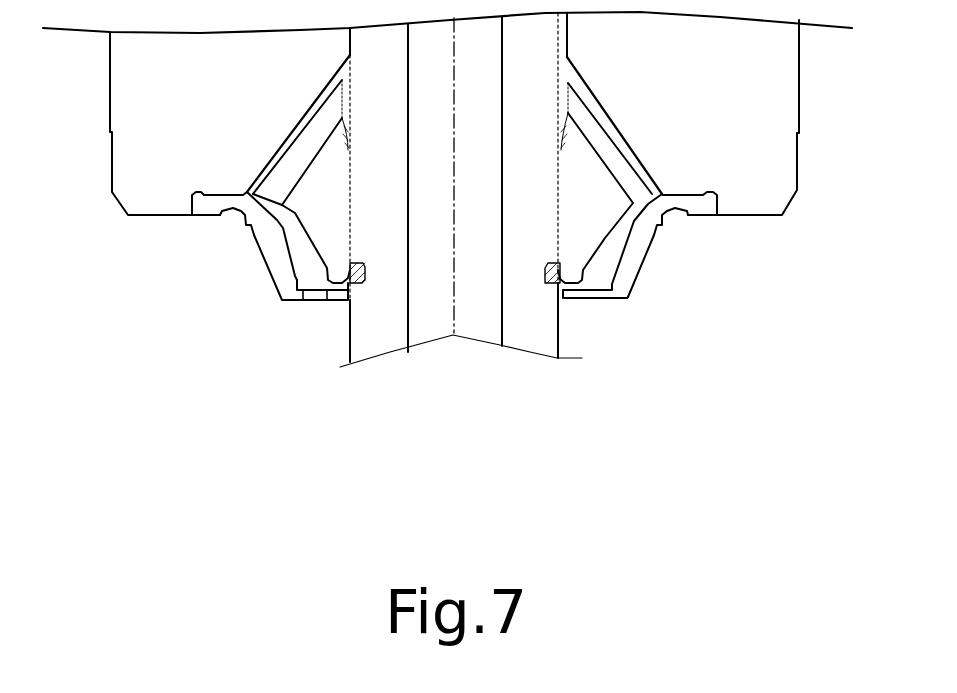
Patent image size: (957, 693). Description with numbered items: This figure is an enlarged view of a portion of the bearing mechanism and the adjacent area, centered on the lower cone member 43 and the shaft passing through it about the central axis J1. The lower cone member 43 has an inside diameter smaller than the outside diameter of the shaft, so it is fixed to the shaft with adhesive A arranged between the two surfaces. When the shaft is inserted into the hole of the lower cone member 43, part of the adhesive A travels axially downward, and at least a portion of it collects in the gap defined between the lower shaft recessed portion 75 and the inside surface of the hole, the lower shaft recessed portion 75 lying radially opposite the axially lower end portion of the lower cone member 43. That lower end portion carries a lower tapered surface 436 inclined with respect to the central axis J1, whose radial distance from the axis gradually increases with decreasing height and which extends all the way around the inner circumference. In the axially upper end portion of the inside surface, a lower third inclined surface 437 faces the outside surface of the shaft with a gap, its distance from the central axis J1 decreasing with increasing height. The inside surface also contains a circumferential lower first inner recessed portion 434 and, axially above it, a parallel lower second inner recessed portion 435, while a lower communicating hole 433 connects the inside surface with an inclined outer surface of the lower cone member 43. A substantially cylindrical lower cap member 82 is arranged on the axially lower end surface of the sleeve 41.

The sleeve 41 is at (718, 113).
The lower cone member 43 is at (590, 232).
The lower communicating hole 433 is at (667, 225).
The lower first inner recessed portion 434 is at (560, 235).
The lower second inner recessed portion 435 is at (562, 155).
The lower tapered surface 436 is at (340, 290).
The lower third inclined surface 437 is at (343, 124).
The lower shaft recessed portion 75 is at (563, 288).
The lower cap member 82 is at (288, 300).
The adhesive A is at (345, 118).
The central axis J1 is at (453, 297).